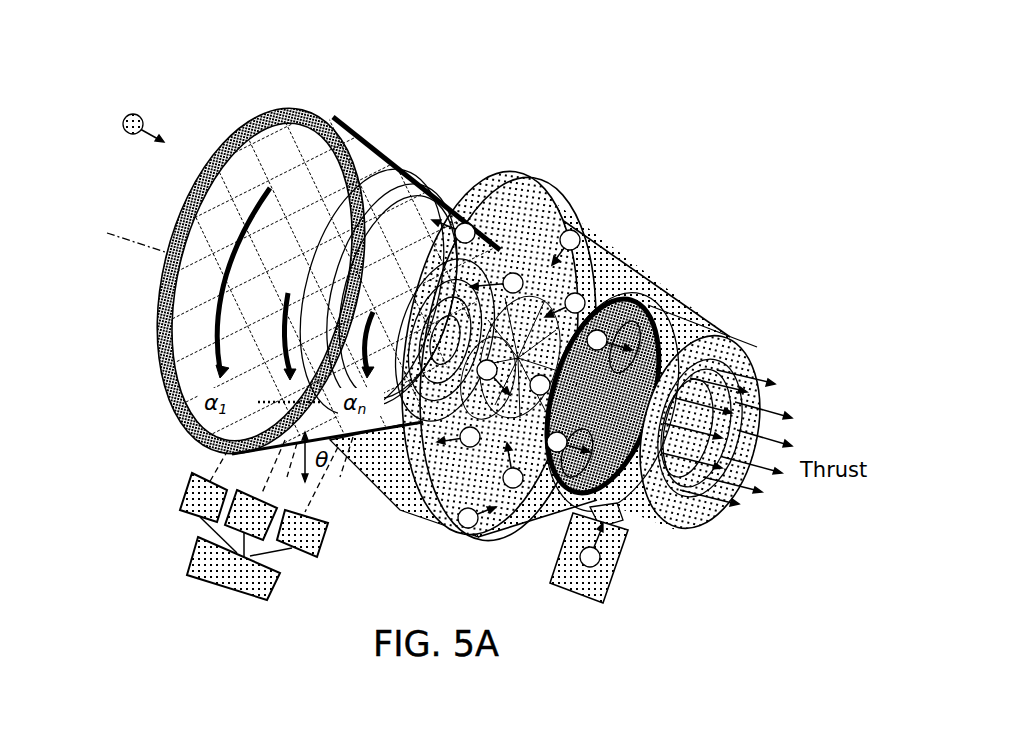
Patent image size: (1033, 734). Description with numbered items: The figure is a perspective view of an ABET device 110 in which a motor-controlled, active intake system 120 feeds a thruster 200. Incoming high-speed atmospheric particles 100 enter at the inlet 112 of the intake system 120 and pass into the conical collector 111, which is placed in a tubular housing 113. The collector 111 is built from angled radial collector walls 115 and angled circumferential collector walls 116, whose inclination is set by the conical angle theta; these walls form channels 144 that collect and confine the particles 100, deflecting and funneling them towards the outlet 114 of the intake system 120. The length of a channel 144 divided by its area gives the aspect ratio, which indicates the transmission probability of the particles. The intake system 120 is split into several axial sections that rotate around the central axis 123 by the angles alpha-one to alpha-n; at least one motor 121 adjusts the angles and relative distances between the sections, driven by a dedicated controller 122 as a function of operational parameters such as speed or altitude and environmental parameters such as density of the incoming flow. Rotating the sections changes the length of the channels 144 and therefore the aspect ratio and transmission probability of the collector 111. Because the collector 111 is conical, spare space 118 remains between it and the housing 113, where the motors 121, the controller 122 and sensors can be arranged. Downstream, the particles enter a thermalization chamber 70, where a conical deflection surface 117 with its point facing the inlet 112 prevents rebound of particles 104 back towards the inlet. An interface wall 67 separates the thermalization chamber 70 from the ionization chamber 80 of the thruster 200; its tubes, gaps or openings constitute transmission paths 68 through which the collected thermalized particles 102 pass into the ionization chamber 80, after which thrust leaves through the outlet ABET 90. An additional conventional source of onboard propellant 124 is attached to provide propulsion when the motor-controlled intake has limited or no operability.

The particles 100 is at (126, 116).
The collected thermalized atmospheric particles 102 is at (600, 240).
The particles 104 is at (512, 200).
The ABET device 110 is at (824, 98).
The collector 111 is at (325, 269).
The inlet 112 is at (168, 300).
The housing 113 is at (370, 123).
The outlet 114 is at (376, 505).
The radial collector wall 115 is at (425, 185).
The circumferential collector wall 116 is at (573, 195).
The conical deflection surface 117 is at (553, 505).
The spare space 118 is at (400, 160).
The intake system 120 is at (434, 92).
The motor 121 is at (187, 493).
The controller 122 is at (188, 555).
The central axis 123 is at (143, 247).
The source of onboard propellant 124 is at (623, 560).
The channels 144 is at (180, 360).
The thruster 200 is at (723, 277).
The interface wall 67 is at (648, 300).
The transmission paths 68 is at (600, 399).
The thermalization chamber 70 is at (600, 272).
The ionization chamber 80 is at (700, 330).
The outlet ABET 90 is at (753, 350).